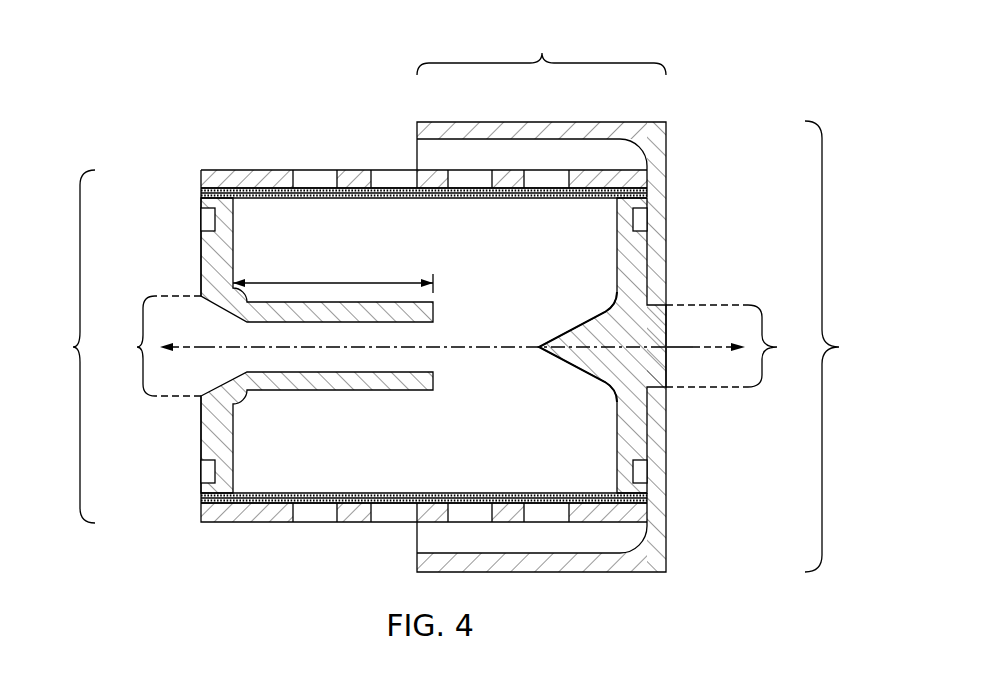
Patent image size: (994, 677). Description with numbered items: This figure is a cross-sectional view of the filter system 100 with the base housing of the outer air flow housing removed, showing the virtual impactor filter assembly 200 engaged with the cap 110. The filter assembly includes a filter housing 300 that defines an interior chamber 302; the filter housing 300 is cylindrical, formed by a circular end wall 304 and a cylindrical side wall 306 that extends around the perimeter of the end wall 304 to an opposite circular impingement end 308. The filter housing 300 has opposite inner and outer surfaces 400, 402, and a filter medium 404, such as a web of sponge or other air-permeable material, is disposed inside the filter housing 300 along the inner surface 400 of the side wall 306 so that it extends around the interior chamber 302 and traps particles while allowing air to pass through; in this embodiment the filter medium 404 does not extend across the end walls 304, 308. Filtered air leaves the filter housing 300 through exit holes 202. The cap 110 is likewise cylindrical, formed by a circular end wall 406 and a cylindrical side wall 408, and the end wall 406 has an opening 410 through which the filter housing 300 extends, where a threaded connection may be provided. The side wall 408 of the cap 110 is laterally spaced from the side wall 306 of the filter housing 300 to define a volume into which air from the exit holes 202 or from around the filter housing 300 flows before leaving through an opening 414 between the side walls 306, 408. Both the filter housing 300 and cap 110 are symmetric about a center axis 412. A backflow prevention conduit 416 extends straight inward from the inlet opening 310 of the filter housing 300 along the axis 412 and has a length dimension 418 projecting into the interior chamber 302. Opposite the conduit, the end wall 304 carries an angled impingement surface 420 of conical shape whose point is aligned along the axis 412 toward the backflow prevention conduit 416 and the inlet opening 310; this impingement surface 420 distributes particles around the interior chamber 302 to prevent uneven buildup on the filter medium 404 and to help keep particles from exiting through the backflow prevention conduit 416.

The filter system 100 is at (839, 345).
The cap 110 is at (543, 53).
The virtual impactor filter assembly 200 is at (73, 345).
The exit holes 202 is at (308, 513).
The filter housing 300 is at (220, 178).
The interior chamber 302 is at (660, 242).
The end wall 304 is at (667, 440).
The side wall 306 is at (585, 180).
The impingement end 308 is at (190, 431).
The inlet opening 310 is at (137, 345).
The inner surface 400 is at (247, 178).
The outer surface 402 is at (355, 159).
The filter medium 404 is at (322, 199).
The end wall 406 is at (667, 176).
The side wall 408 is at (525, 130).
The opening 410 is at (777, 344).
The center axis 412 is at (688, 343).
The opening 414 is at (410, 524).
The backflow prevention conduit 416 is at (343, 387).
The length dimension 418 is at (389, 279).
The impingement surface 420 is at (580, 321).